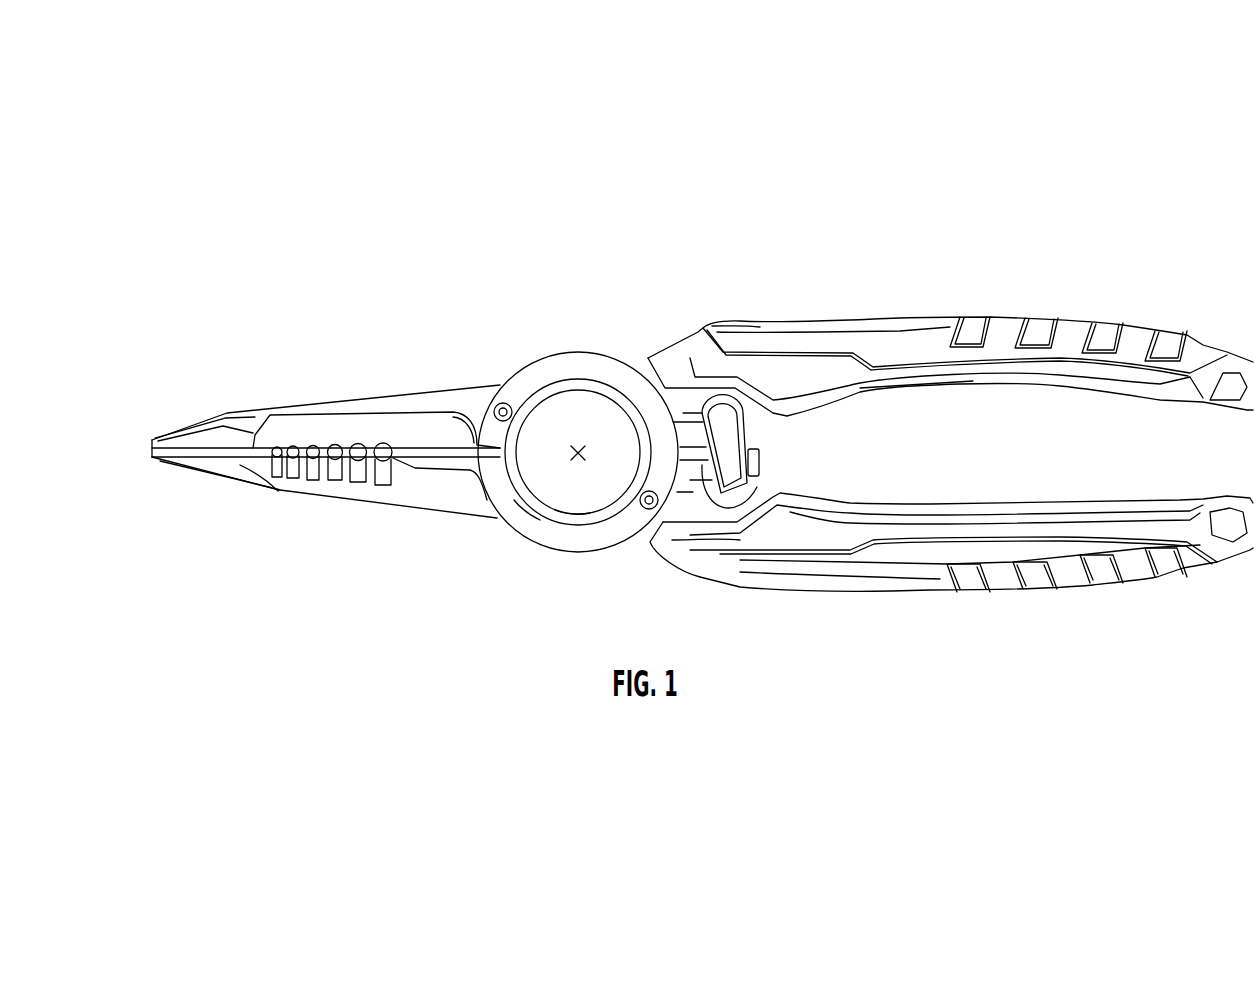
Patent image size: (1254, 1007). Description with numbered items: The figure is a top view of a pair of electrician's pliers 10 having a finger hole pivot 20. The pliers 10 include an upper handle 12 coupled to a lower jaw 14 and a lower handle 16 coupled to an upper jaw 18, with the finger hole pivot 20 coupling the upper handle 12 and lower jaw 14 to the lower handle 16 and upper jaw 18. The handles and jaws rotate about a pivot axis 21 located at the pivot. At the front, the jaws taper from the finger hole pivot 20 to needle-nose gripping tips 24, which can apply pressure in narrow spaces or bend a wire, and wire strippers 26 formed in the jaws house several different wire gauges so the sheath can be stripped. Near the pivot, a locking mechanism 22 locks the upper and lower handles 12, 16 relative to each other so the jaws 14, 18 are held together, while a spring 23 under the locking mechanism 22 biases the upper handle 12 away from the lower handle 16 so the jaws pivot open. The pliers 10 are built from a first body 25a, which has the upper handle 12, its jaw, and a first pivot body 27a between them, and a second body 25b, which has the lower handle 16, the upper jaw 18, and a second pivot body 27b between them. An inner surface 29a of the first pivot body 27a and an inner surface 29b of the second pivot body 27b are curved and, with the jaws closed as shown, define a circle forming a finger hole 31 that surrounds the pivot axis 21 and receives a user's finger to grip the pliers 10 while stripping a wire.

The electrician's pliers 10 is at (831, 252).
The upper handle 12 is at (1043, 316).
The lower jaw 14 is at (282, 495).
The lower handle 16 is at (1013, 584).
The upper jaw 18 is at (268, 412).
The finger hole pivot 20 is at (522, 372).
The pivot axis 21 is at (578, 448).
The locking mechanism 22 is at (746, 440).
The spring 23 is at (766, 466).
The needle-nose gripping tips 24 is at (150, 455).
The first body 25a is at (738, 328).
The second body 25b is at (668, 546).
The wire strippers 26 is at (358, 508).
The first pivot body 27a is at (531, 505).
The second pivot body 27b is at (575, 517).
The inner surface of first pivot body 29a is at (555, 380).
The inner surface of second pivot body 29b is at (575, 384).
The finger hole 31 is at (540, 428).